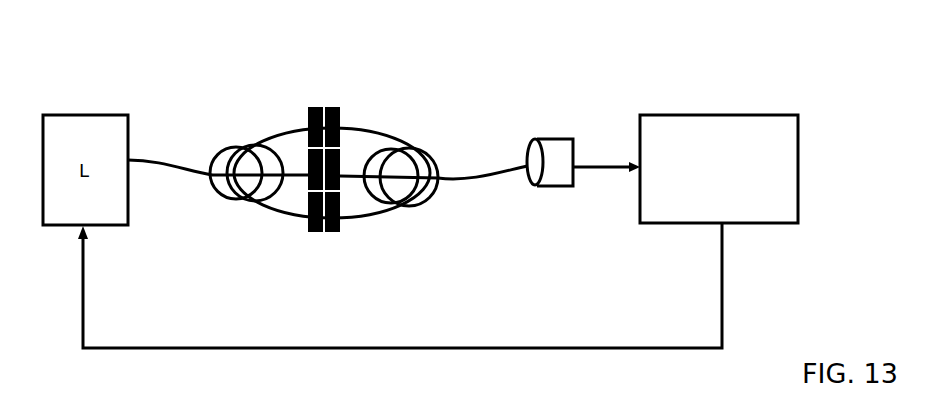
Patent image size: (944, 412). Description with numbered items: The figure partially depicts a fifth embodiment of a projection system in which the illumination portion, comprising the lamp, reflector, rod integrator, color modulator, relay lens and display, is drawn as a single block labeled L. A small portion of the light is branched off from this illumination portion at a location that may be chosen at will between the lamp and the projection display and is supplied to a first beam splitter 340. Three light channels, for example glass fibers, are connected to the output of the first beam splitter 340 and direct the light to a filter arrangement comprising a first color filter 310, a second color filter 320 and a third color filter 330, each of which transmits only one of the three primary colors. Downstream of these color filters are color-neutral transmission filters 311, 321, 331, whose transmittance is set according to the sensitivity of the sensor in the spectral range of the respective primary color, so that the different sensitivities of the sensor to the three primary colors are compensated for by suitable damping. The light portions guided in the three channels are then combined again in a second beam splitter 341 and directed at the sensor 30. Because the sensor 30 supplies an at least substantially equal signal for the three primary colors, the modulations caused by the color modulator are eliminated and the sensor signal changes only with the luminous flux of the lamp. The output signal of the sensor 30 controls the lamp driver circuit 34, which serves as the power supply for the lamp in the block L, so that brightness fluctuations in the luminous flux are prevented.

The sensor 30 is at (539, 115).
The lamp driver circuit 34 is at (719, 169).
The first color filter 310 is at (325, 47).
The second color filter 320 is at (315, 169).
The third color filter 330 is at (315, 212).
The color-neutral transmission filter 311 is at (490, 320).
The color-neutral transmission filter 321 is at (332, 169).
The color-neutral transmission filter 331 is at (332, 212).
The first beam splitter 340 is at (219, 225).
The second beam splitter 341 is at (417, 120).